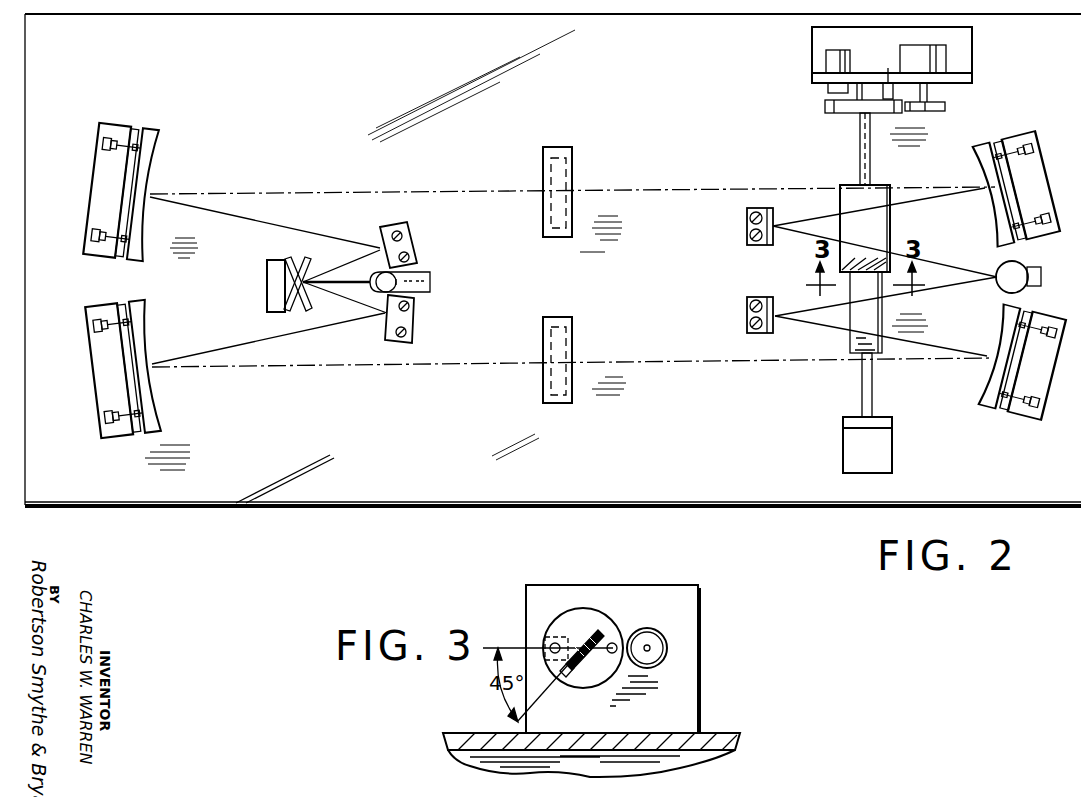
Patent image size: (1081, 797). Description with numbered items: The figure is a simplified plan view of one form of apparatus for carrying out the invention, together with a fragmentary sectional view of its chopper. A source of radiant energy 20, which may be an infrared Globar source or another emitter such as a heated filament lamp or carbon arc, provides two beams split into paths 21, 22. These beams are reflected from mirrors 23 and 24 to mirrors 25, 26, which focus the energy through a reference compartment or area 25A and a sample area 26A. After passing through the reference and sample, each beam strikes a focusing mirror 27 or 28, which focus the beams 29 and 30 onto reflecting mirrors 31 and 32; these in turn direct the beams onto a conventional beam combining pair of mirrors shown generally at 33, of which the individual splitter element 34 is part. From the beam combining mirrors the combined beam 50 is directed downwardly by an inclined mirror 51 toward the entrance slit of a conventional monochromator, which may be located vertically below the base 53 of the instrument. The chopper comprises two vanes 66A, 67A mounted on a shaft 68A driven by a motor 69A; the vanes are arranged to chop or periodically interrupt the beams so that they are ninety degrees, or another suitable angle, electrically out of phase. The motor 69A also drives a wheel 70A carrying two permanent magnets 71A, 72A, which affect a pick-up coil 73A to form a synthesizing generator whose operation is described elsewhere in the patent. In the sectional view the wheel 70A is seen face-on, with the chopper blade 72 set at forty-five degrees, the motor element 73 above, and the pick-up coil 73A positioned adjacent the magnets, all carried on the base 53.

In FIG. 2, the source of radiant energy 20 is at (1022, 290).
In FIG. 2, the beam path 21 is at (960, 238).
In FIG. 2, the beam path 22 is at (928, 298).
In FIG. 2, the mirror 23 is at (773, 216).
In FIG. 2, the mirror 24 is at (773, 328).
In FIG. 2, the mirror 25 is at (976, 170).
In FIG. 2, the mirror 26 is at (980, 392).
In FIG. 2, the reference compartment 25A is at (572, 152).
In FIG. 2, the sample area 26A is at (572, 332).
In FIG. 2, the focusing mirror 27 is at (158, 154).
In FIG. 2, the focusing mirror 28 is at (163, 410).
In FIG. 2, the beam 29 is at (308, 204).
In FIG. 2, the beam 30 is at (312, 328).
In FIG. 2, the reflecting mirror 31 is at (380, 232).
In FIG. 2, the reflecting mirror 32 is at (384, 322).
In FIG. 2, the beam combining pair of mirrors 33 is at (266, 298).
In FIG. 2, the beam splitter 34 is at (291, 262).
In FIG. 2, the combined beam 50 is at (346, 252).
In FIG. 2, the inclined mirror 51 is at (418, 287).
In FIG. 2, the base 53 is at (448, 492).
In FIG. 3, the base 53 is at (470, 733).
In FIG. 2, the vane 66A is at (848, 194).
In FIG. 3, the vane 66A is at (628, 614).
In FIG. 2, the vane 67A is at (872, 350).
In FIG. 3, the vane 67A is at (574, 662).
In FIG. 2, the shaft 68A is at (868, 152).
In FIG. 2, the motor 69A is at (948, 58).
In FIG. 2, the wheel 70A is at (860, 118).
In FIG. 3, the wheel 70A is at (556, 626).
In FIG. 2, the permanent magnet 71A is at (885, 75).
In FIG. 3, the permanent magnet 71A is at (642, 640).
In FIG. 3, the chopper blade 72 is at (590, 636).
In FIG. 2, the permanent magnet 72A is at (826, 106).
In FIG. 2, the motor 73 is at (826, 64).
In FIG. 3, the pick-up coil 73A is at (545, 640).